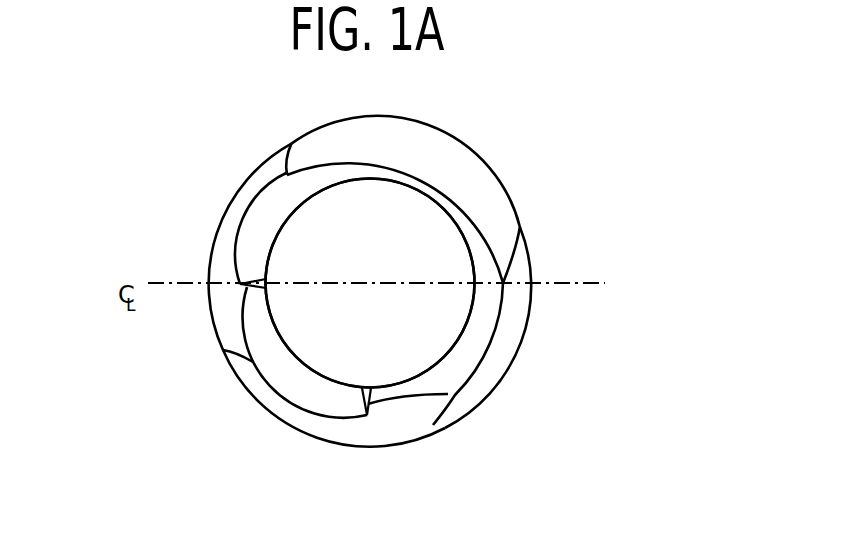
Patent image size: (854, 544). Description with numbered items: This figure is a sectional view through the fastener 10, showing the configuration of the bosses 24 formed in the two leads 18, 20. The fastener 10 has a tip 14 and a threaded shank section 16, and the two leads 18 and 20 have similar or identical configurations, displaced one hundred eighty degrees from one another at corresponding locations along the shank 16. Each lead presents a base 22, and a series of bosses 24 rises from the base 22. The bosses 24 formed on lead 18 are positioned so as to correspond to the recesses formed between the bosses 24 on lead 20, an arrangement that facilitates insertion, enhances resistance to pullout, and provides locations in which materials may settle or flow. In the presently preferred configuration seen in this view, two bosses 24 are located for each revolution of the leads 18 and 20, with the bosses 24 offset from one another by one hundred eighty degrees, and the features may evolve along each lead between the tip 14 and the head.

The fastener 10 is at (600, 187).
The tip 14 is at (417, 326).
The threaded shank section 16 is at (377, 198).
The lead 18 is at (242, 387).
The lead 20 is at (253, 169).
The base 22 is at (483, 313).
The bosses 24 is at (232, 208).